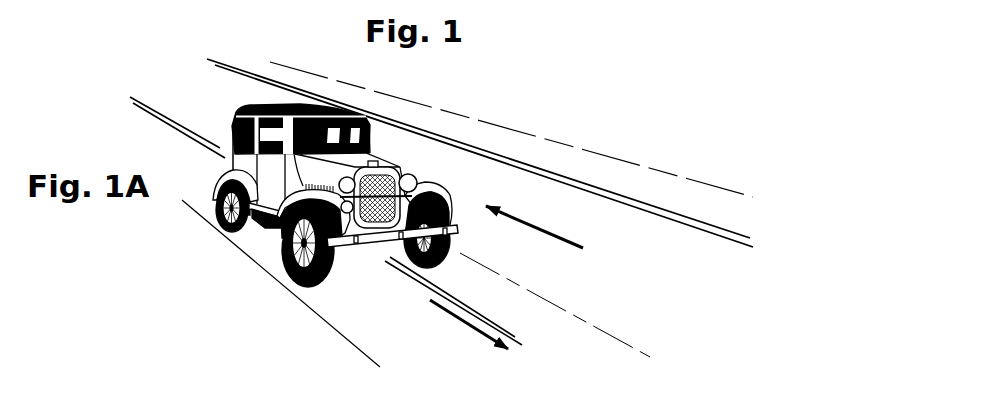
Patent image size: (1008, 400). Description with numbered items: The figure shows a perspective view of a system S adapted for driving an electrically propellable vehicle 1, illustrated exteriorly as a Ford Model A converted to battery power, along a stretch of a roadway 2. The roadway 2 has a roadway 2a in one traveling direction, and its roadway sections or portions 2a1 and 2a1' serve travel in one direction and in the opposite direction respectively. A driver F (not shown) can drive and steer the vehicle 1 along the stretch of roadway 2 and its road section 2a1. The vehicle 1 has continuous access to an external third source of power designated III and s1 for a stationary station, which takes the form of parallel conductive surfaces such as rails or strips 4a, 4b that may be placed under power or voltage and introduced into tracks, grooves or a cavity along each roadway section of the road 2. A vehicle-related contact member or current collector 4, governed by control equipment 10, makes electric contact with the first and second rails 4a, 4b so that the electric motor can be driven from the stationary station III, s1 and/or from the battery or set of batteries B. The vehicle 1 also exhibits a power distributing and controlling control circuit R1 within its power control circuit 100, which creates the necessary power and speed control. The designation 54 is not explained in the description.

In FIG. 1, the vehicle 1 is at (230, 128).
In FIG. 1, the stretch of roadway 2 is at (381, 304).
In FIG. 1, the roadway in one traveling direction 2a is at (548, 378).
In FIG. 1, the roadway section in one traveling direction 2a1 is at (469, 331).
In FIG. 1, the roadway section in an opposite direction 2a1' is at (650, 150).
In FIG. 1A, the contact member (current collector) 4 is at (362, 250).
In FIG. 1, the first rail 4a is at (720, 238).
In FIG. 1, the second rail 4b is at (735, 231).
In FIG. 1A, the control equipment 10 is at (247, 233).
In FIG. 1, the center line marking 54 is at (652, 205).
In FIG. 1, the power control circuit 100 is at (435, 275).
In FIG. 1, the power distributing and controlling control circuit R1 is at (435, 275).
In FIG. 1, the driver F is at (338, 137).
In FIG. 1, the system S is at (543, 126).
In FIG. 1A, the battery or set of batteries B is at (277, 250).
In FIG. 1, the stationary station s1 is at (520, 331).
In FIG. 1, the third power source III is at (520, 331).